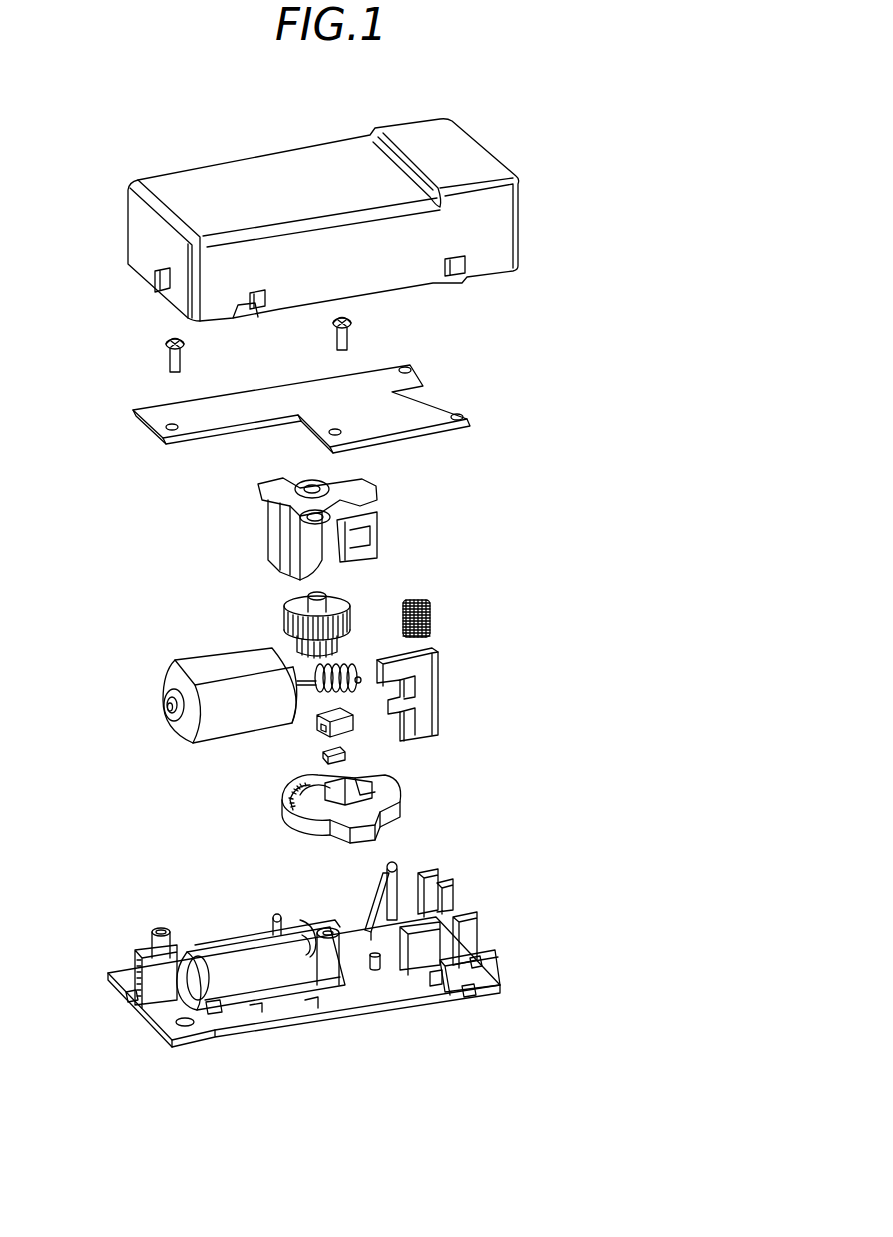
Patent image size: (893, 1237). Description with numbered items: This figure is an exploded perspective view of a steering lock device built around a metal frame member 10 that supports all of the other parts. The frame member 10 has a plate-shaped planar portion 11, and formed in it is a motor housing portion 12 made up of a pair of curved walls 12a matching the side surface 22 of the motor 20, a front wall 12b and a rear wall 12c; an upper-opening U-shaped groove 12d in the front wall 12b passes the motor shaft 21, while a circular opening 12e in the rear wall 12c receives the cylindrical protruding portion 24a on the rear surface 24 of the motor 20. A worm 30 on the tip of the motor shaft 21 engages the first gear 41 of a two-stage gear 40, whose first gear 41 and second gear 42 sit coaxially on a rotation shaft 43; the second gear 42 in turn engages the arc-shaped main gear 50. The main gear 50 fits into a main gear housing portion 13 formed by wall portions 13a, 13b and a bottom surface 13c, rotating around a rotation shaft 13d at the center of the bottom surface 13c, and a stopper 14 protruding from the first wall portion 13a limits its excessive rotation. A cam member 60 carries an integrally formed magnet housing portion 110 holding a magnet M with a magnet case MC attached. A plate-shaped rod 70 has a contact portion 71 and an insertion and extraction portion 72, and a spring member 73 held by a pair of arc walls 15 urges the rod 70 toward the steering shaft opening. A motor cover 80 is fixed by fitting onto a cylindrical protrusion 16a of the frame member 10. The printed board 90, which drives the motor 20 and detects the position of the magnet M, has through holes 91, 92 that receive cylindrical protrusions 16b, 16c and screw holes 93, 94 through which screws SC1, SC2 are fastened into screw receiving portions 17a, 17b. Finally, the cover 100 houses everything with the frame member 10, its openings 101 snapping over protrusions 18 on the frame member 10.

The frame member 10 is at (305, 942).
The planar portion 11 is at (120, 968).
The motor housing portion 12 is at (261, 971).
The curved walls 12a is at (228, 960).
The front wall 12b is at (312, 1005).
The rear wall 12c is at (178, 1030).
The U-shaped groove 12d is at (300, 935).
The circular opening 12e is at (148, 965).
The main gear housing portion 13 is at (439, 950).
The first wall portion 13a is at (385, 875).
The second wall portion 13b is at (340, 930).
The bottom surface 13c is at (370, 935).
The rotation shaft 13d is at (440, 985).
The stopper 14 is at (445, 955).
The arc walls 15 is at (440, 880).
The cylindrical protrusion 16a is at (278, 916).
The cylindrical protrusion 16b is at (470, 918).
The cylindrical protrusion 16c is at (395, 868).
The screw receiving portion 17a is at (330, 985).
The screw receiving portion 17b is at (160, 930).
The protrusions 18 is at (130, 995).
The motor 20 is at (189, 704).
The motor shaft 21 is at (233, 680).
The side surface 22 is at (215, 728).
The rear surface 24 is at (162, 690).
The cylindrical protruding portion 24a is at (166, 722).
The worm 30 is at (343, 668).
The two-stage gear 40 is at (289, 612).
The first gear 41 is at (334, 605).
The second gear 42 is at (343, 637).
The rotation shaft 43 is at (298, 603).
The main gear 50 is at (266, 795).
The cam member 60 is at (336, 813).
The rod 70 is at (447, 713).
The contact portion 71 is at (405, 683).
The insertion and extraction portion 72 is at (432, 735).
The spring member 73 is at (428, 600).
The motor cover 80 is at (377, 540).
The printed board 90 is at (373, 408).
The through hole 91 is at (467, 418).
The through hole 92 is at (403, 367).
The screw hole 93 is at (333, 432).
The screw hole 94 is at (178, 438).
The cover 100 is at (507, 243).
The openings 101 is at (150, 275).
The magnet housing portion 110 is at (293, 818).
The magnet M is at (350, 752).
The magnet case MC is at (325, 740).
The screw SC1 is at (333, 336).
The screw SC2 is at (166, 353).